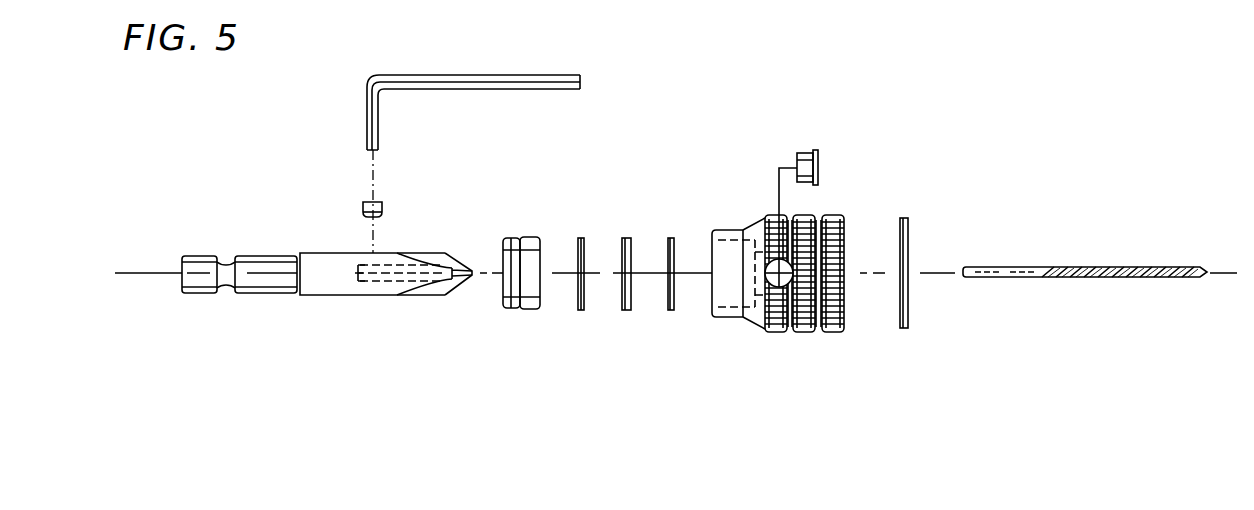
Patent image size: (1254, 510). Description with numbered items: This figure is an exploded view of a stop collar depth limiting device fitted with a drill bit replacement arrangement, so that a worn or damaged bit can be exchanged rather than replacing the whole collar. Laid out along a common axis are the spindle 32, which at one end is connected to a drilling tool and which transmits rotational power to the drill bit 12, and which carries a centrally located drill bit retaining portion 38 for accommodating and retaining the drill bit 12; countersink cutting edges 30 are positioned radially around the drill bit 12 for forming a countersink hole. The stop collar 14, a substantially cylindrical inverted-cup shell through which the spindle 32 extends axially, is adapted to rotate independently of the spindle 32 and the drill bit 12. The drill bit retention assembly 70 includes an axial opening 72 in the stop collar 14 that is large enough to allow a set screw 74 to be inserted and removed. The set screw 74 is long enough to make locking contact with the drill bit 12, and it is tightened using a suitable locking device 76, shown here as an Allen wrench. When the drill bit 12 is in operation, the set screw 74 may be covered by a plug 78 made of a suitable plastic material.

The drill bit 12 is at (1110, 267).
The stop collar 14 is at (832, 214).
The countersink cutting edges 30 is at (450, 294).
The spindle 32 is at (195, 255).
The drill bit retaining portion 38 is at (323, 296).
The drill bit retention assembly 70 is at (433, 181).
The axial opening 72 is at (775, 283).
The set screw 74 is at (360, 209).
The locking device 76 is at (508, 75).
The plug 78 is at (803, 150).